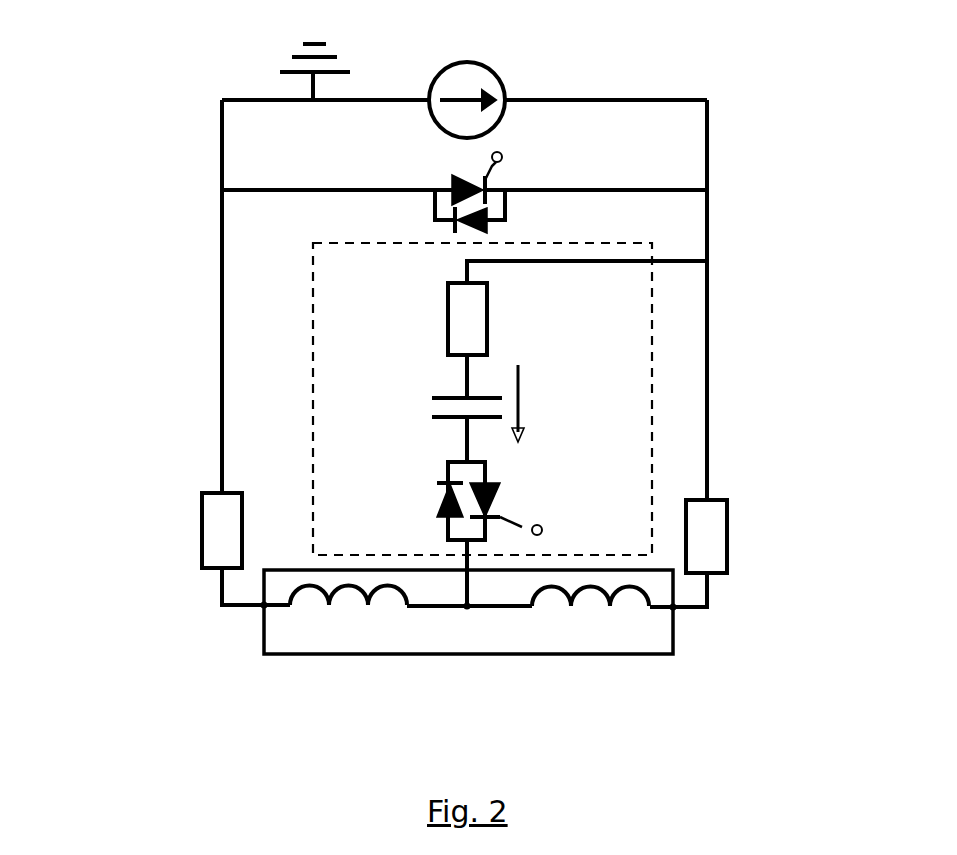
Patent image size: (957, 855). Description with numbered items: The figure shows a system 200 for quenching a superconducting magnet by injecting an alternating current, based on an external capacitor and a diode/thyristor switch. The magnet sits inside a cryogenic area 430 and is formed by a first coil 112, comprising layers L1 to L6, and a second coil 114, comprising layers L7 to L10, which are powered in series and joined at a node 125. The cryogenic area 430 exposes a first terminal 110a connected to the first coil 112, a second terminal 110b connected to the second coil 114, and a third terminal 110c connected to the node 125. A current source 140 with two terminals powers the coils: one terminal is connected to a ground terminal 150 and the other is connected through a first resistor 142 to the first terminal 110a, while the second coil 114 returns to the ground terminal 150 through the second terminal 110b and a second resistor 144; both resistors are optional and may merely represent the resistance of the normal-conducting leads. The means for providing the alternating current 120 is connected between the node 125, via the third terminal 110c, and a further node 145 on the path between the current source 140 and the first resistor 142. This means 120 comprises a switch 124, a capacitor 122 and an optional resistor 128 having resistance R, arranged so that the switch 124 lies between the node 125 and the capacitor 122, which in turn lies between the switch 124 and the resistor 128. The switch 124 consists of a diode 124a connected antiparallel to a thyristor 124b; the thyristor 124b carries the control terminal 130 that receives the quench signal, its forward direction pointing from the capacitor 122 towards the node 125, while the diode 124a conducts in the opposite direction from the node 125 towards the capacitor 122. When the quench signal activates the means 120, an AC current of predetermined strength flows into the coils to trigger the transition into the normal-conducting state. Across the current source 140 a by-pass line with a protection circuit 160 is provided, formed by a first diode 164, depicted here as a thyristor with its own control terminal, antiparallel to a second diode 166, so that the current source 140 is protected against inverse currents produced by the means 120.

The system 200 is at (832, 94).
The ground terminal 150 is at (286, 61).
The current source 140 is at (508, 90).
The protection circuit 160 is at (445, 170).
The first diode (thyristor) 164 is at (495, 176).
The second diode 166 is at (447, 210).
The means for providing an alternating current 120 is at (652, 338).
The further node 145 is at (707, 262).
The resistor 128 is at (487, 327).
The capacitor 122 is at (447, 393).
The switch 124 is at (420, 472).
The diode 124a is at (437, 510).
The thyristor 124b is at (502, 500).
The control terminal 130 is at (545, 530).
The second resistor 144 is at (197, 558).
The first resistor 142 is at (728, 555).
The cryogenic area 430 is at (292, 654).
The second coil 114 is at (395, 610).
The first coil 112 is at (633, 617).
The node 125 is at (467, 612).
The first terminal 110a is at (672, 612).
The second terminal 110b is at (258, 608).
The third terminal 110c is at (472, 573).